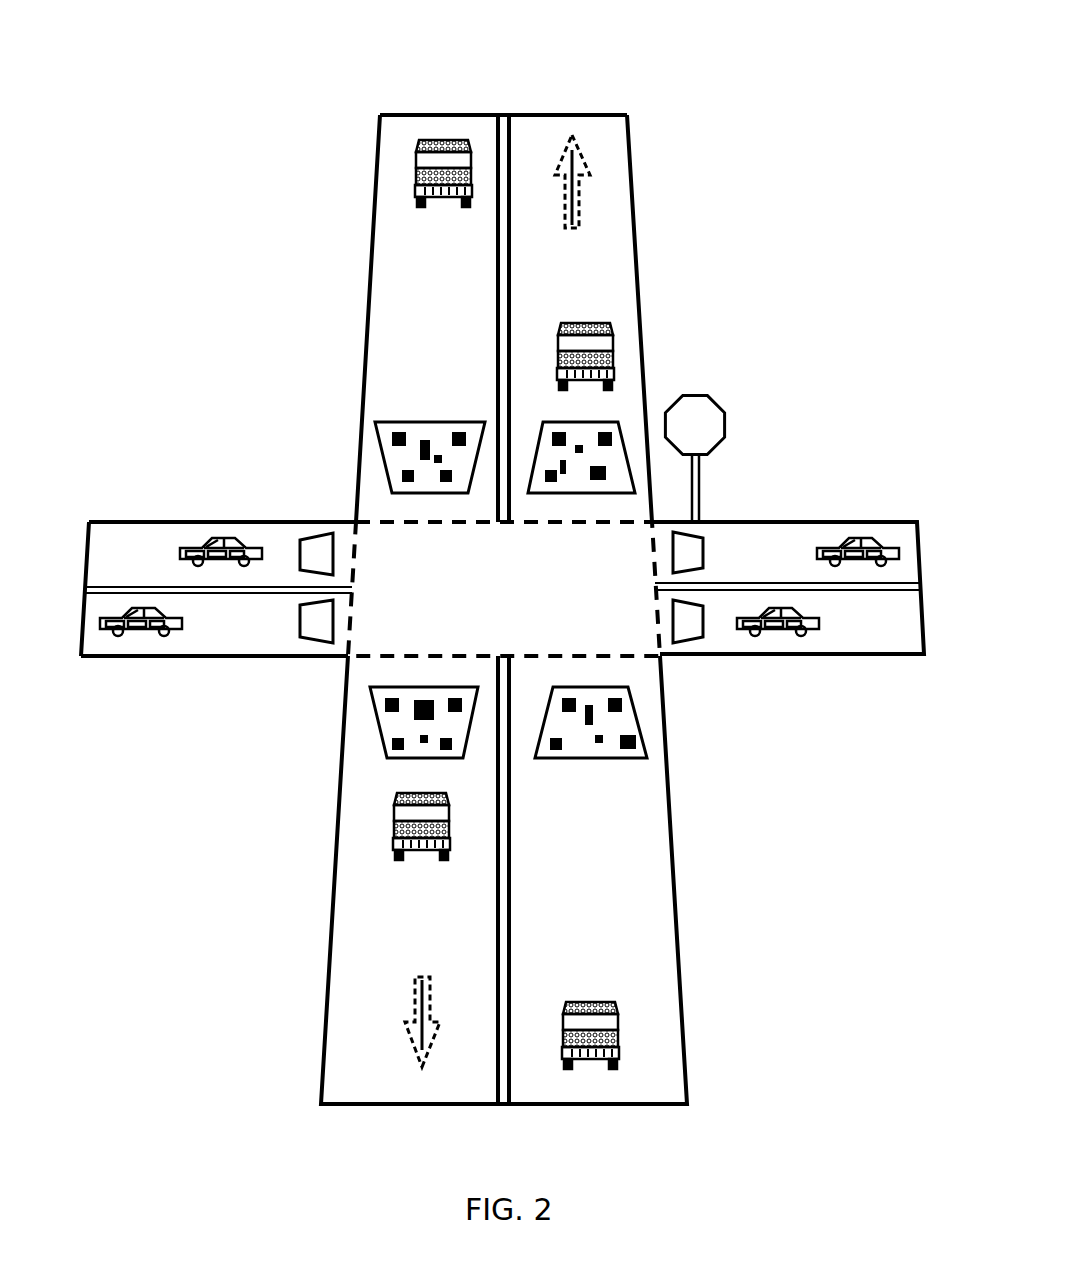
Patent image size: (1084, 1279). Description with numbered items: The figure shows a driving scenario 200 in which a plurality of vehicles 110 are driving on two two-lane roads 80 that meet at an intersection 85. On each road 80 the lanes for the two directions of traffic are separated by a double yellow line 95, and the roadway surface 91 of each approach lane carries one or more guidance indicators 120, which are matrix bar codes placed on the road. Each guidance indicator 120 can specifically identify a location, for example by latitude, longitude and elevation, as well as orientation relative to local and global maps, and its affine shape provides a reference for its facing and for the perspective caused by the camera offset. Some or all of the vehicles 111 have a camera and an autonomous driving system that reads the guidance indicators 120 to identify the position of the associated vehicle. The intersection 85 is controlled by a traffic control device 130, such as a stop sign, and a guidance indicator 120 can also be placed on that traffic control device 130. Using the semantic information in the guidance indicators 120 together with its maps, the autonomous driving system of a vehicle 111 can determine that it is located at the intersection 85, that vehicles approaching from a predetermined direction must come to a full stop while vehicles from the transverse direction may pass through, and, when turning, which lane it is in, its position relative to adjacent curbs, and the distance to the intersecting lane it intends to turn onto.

The driving scenario 200 is at (390, 42).
The two-lane road 80 is at (857, 622).
The intersection 85 is at (395, 628).
The roadway surface 91 is at (503, 601).
The double yellow line 95 is at (505, 106).
The vehicle 110 is at (580, 345).
The vehicle with camera and autonomous driving system 111 is at (440, 162).
The guidance indicator 120 is at (377, 453).
The traffic control device 130 is at (700, 425).